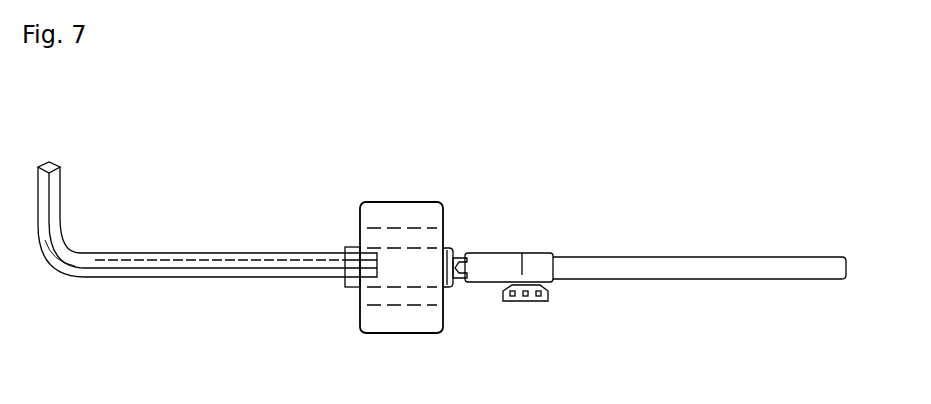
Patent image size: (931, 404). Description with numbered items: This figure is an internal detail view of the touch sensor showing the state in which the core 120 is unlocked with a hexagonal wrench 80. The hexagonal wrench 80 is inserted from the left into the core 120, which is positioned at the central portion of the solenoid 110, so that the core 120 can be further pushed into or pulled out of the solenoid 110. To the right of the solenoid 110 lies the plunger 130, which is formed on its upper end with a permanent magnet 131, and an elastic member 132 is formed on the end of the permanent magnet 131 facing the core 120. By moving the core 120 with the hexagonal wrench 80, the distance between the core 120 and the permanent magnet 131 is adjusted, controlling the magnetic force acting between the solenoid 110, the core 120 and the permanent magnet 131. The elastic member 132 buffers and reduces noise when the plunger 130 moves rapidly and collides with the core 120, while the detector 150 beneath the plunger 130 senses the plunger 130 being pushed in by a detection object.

The hexagonal wrench 80 is at (175, 268).
The solenoid 110 is at (387, 213).
The core 120 is at (352, 287).
The plunger 130 is at (658, 270).
The permanent magnet 131 is at (512, 262).
The elastic member 132 is at (462, 253).
The detector 150 is at (528, 303).